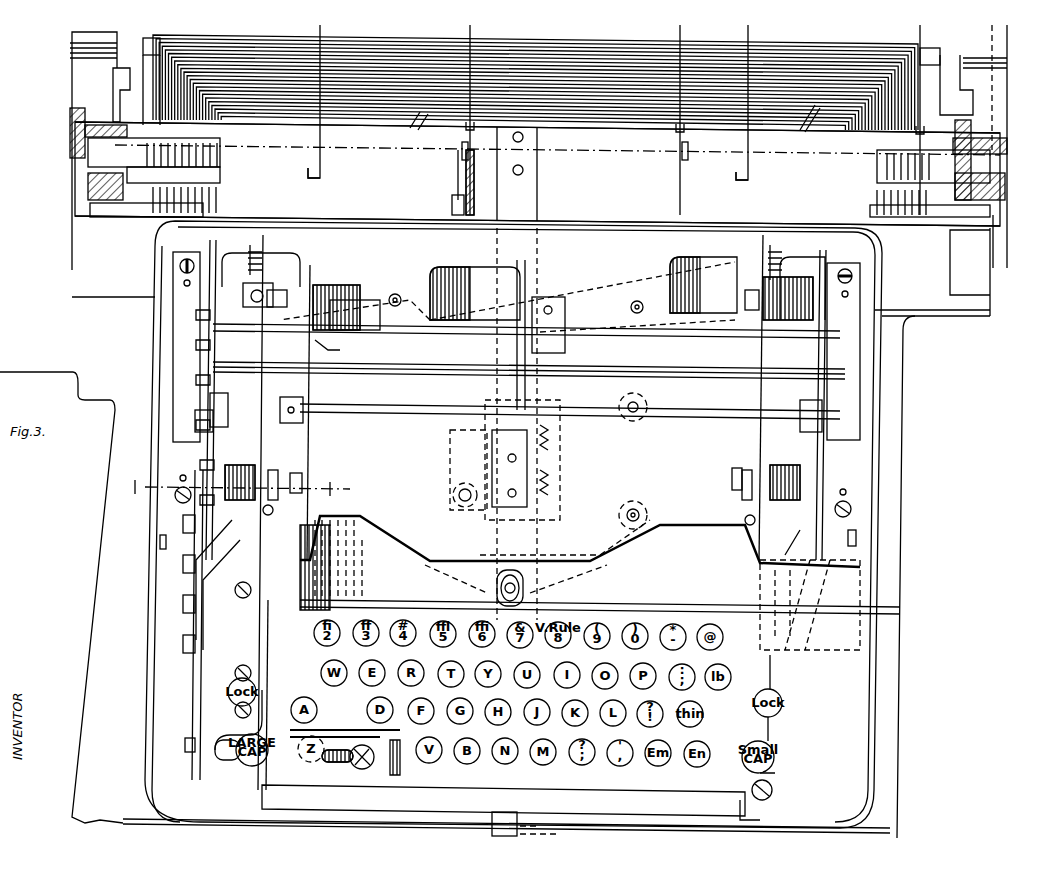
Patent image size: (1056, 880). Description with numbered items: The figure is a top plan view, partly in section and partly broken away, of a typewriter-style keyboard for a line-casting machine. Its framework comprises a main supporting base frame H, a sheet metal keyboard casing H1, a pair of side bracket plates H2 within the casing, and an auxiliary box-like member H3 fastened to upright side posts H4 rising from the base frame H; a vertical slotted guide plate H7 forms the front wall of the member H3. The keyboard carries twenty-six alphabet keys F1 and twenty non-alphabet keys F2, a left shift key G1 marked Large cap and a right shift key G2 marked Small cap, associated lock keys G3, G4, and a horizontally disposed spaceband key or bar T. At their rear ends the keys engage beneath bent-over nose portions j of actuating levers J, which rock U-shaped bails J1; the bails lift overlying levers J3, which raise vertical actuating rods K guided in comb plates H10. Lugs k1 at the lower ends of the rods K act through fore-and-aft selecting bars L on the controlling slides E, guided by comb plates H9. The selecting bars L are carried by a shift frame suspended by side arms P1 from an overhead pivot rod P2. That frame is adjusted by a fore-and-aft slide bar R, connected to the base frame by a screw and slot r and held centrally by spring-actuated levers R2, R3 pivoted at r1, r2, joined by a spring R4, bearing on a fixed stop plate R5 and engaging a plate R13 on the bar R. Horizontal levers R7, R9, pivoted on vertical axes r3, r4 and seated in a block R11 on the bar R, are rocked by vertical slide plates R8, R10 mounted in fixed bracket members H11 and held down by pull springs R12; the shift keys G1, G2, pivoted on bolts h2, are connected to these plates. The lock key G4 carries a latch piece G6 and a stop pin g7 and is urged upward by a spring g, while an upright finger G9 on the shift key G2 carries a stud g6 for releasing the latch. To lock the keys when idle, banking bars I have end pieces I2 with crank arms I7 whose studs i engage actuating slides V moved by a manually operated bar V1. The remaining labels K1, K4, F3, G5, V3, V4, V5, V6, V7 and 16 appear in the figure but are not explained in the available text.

The side arms P1 is at (134, 60).
The overhead pivot rod P2 is at (944, 50).
The main supporting base frame H is at (388, 540).
The keyboard casing H1 is at (148, 555).
The side bracket plates H2 is at (205, 283).
The auxiliary box-like member H3 is at (537, 174).
The upright side posts H4 is at (75, 195).
The vertical slotted guide plate H7 is at (233, 146).
The comb plates H9 is at (220, 180).
The comb plates H10 is at (185, 146).
The fixed bracket members H11 is at (236, 262).
The actuating levers J is at (322, 170).
The nose portions j is at (308, 174).
The rocking bails J1 is at (611, 141).
The overlying levers J3 is at (472, 140).
The vertical actuating rods K is at (222, 162).
The pawl K1 is at (470, 150).
The ears or lugs k1 is at (690, 150).
The pawl bar K4 is at (465, 150).
The selecting bars L is at (456, 172).
The controlling slides E is at (160, 212).
The slide bar R is at (538, 186).
The spring-actuated lever R2 is at (642, 362).
The spring-actuated lever R3 is at (585, 515).
The connecting spring R4 is at (548, 440).
The fixed stop plate R5 is at (450, 465).
The horizontal lever R7 is at (350, 300).
The vertical slide plate R8 is at (277, 290).
The horizontal lever R9 is at (742, 285).
The slide plate R10 is at (750, 312).
The block R11 is at (475, 293).
The pull springs R12 is at (249, 295).
The plate R13 is at (528, 480).
The screw and slot r is at (520, 586).
The pivot r1 is at (639, 506).
The pivot r2 is at (626, 402).
The vertical axis r3 is at (404, 295).
The vertical axis r4 is at (642, 298).
The shift key G1 is at (268, 388).
The shift key G2 is at (740, 410).
The lock key G3 is at (268, 252).
The lock key G4 is at (770, 238).
The shaft G5 is at (405, 333).
The latch piece G6 is at (225, 420).
The upright finger G9 is at (280, 476).
The spring g is at (262, 262).
The stud g6 is at (265, 468).
The stop pin g7 is at (274, 510).
The bolts h2 is at (303, 480).
The alphabet keys F1 is at (312, 290).
The non-alphabet keys F2 is at (535, 640).
The link F3 is at (334, 345).
The actuating slides V is at (194, 580).
The manually operated bar V1 is at (518, 485).
The lever end V3 is at (222, 760).
The pivot screw V4 is at (362, 770).
The rod V5 is at (532, 280).
The block V6 is at (505, 812).
The stop V7 is at (188, 755).
The banking bars I is at (235, 582).
The end pieces I2 is at (220, 565).
The crank arm I7 is at (215, 540).
The studs i is at (190, 550).
The spaceband key or bar T is at (262, 802).
The section line 16 is at (236, 487).